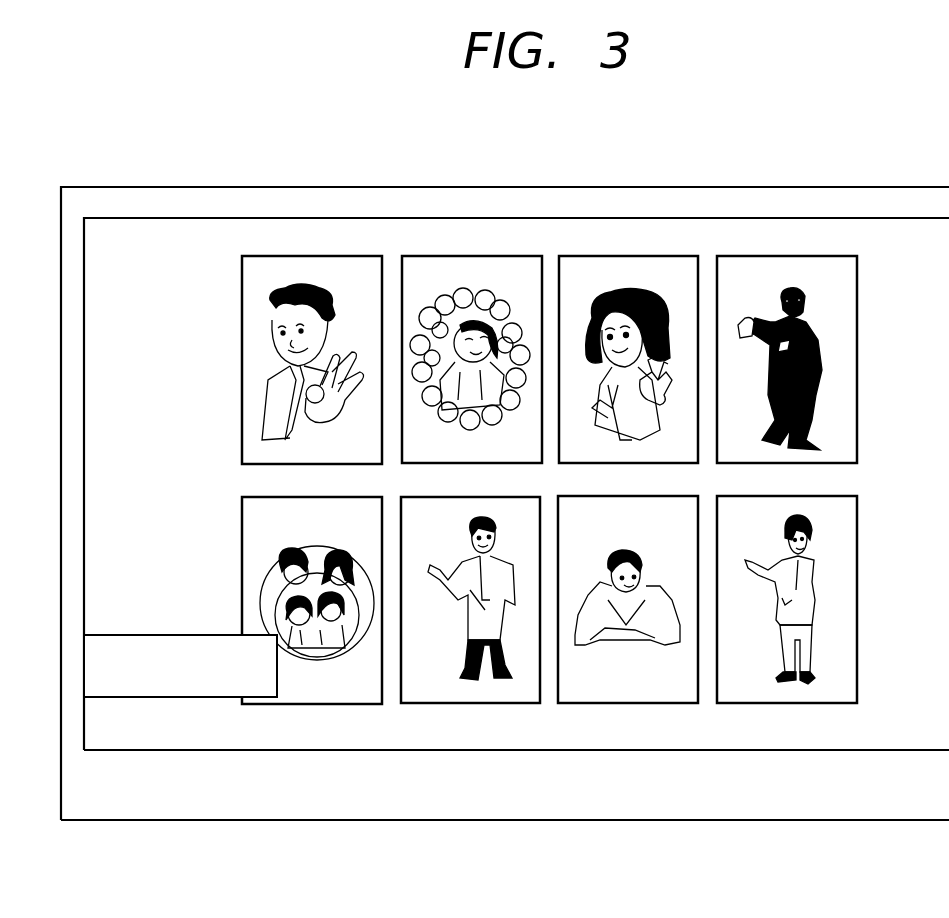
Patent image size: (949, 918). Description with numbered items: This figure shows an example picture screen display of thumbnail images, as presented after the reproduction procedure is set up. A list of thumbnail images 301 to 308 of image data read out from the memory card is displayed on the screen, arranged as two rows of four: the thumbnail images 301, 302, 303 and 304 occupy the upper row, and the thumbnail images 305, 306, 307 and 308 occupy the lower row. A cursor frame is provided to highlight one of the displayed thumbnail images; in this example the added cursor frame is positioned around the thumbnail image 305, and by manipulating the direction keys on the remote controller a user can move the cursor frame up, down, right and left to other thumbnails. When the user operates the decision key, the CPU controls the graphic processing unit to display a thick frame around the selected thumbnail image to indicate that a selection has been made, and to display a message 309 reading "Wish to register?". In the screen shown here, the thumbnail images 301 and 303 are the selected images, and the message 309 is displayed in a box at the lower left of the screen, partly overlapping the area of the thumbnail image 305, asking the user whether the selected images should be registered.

The thumbnail image 301 is at (343, 272).
The thumbnail image 302 is at (497, 272).
The thumbnail image 303 is at (660, 272).
The thumbnail image 304 is at (824, 272).
The thumbnail image 305 is at (307, 688).
The thumbnail image 306 is at (443, 688).
The thumbnail image 307 is at (608, 687).
The thumbnail image 308 is at (767, 687).
The message 309 is at (148, 634).